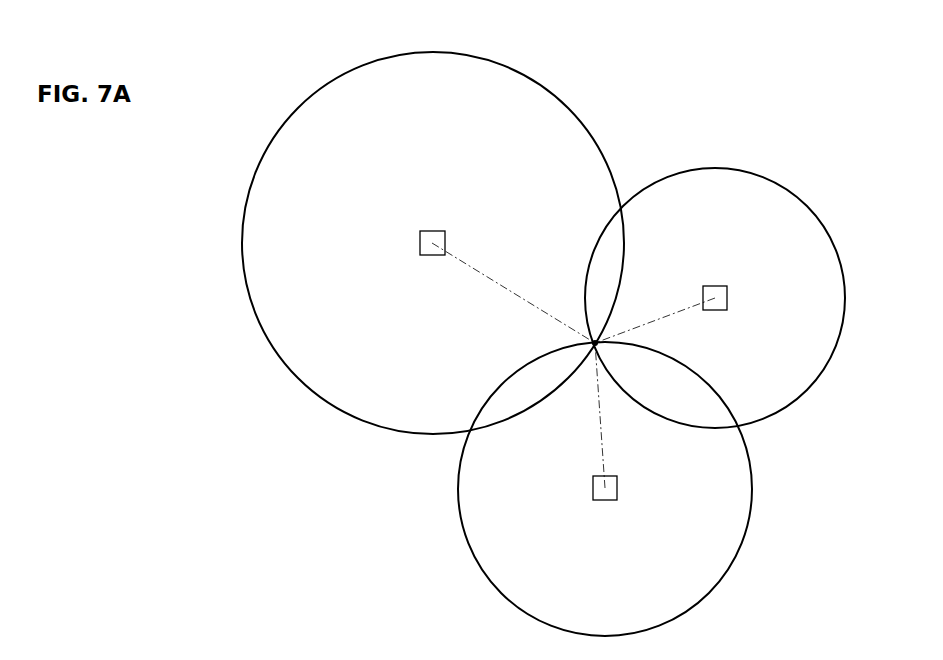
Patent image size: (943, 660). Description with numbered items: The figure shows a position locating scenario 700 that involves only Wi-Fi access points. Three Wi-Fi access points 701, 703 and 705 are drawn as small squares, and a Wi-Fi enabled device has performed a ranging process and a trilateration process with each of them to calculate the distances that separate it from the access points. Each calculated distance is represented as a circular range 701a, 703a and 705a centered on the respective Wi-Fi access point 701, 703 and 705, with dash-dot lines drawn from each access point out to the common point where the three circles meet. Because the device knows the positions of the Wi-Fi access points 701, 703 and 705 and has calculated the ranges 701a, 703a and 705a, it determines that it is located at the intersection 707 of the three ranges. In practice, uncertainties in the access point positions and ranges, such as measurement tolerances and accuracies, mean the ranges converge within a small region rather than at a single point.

The position locating scenario 700 is at (169, 105).
The Wi-Fi access point 701 is at (440, 231).
The circular range 701a is at (325, 82).
The Wi-Fi access point 703 is at (724, 286).
The circular range 703a is at (713, 169).
The Wi-Fi access point 705 is at (593, 476).
The circular range 705a is at (670, 618).
The intersection 707 is at (545, 328).